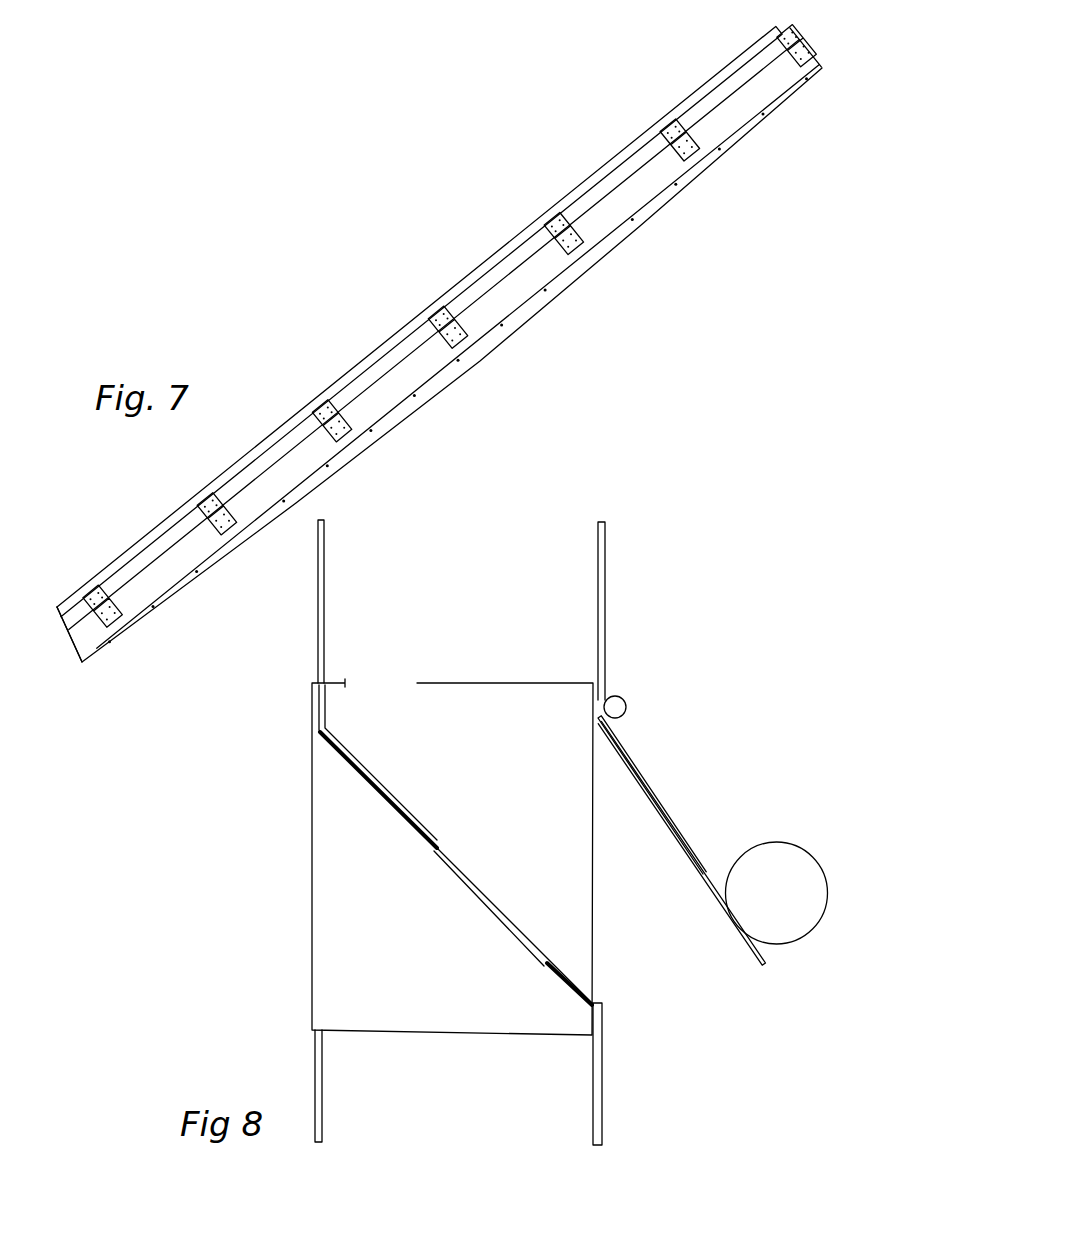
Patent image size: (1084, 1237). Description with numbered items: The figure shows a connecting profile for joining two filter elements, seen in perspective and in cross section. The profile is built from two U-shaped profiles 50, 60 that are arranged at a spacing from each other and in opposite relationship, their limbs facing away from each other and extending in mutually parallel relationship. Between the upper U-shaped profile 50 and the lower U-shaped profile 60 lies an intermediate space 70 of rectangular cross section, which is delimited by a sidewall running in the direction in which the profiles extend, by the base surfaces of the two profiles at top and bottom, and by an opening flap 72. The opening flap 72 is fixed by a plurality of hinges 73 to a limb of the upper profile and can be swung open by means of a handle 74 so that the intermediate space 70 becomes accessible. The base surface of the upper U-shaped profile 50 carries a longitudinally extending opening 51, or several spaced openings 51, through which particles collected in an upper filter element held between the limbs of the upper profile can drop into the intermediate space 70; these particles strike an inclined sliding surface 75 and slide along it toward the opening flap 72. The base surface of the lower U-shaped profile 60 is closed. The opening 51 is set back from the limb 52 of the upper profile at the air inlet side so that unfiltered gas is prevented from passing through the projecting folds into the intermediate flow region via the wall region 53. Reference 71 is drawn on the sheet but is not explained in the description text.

In FIG. 7, the upper U-shaped profile 50 is at (63, 612).
In FIG. 8, the upper U-shaped profile 50 is at (527, 566).
In FIG. 8, the opening 51 is at (382, 667).
In FIG. 8, the limb 52 is at (595, 590).
In FIG. 8, the wall region 53 is at (513, 683).
In FIG. 7, the lower U-shaped profile 60 is at (113, 648).
In FIG. 8, the lower U-shaped profile 60 is at (505, 1056).
In FIG. 7, the intermediate space 70 is at (78, 637).
In FIG. 8, the intermediate space 70 is at (472, 863).
In FIG. 7, the board 71 is at (72, 627).
In FIG. 8, the board 71 is at (312, 863).
In FIG. 7, the opening flap 72 is at (167, 572).
In FIG. 8, the opening flap 72 is at (710, 877).
In FIG. 8, the hinge 73 is at (612, 695).
In FIG. 8, the handle 74 is at (795, 873).
In FIG. 8, the inclined sliding surface 75 is at (383, 797).